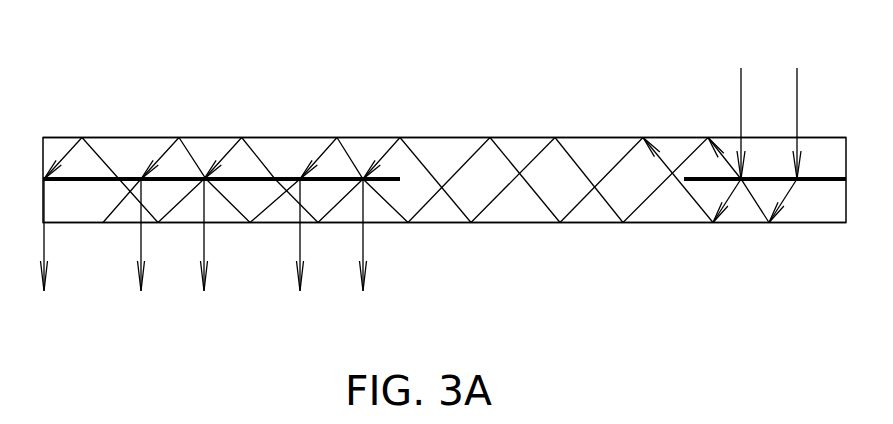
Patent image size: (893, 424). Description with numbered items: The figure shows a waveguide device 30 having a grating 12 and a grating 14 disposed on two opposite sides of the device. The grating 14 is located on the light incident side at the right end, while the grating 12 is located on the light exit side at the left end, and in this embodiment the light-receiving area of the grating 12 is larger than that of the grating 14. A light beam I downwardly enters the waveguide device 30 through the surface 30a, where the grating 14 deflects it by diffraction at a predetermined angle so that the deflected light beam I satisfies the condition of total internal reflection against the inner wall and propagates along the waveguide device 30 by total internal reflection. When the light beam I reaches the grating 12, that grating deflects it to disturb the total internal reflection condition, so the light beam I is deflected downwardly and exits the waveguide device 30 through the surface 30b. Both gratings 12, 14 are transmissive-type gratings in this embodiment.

The waveguide device 30 is at (438, 128).
The surface 30a is at (536, 137).
The surface 30b is at (496, 223).
The grating 12 is at (79, 181).
The grating 14 is at (806, 181).
The light beam I is at (364, 244).